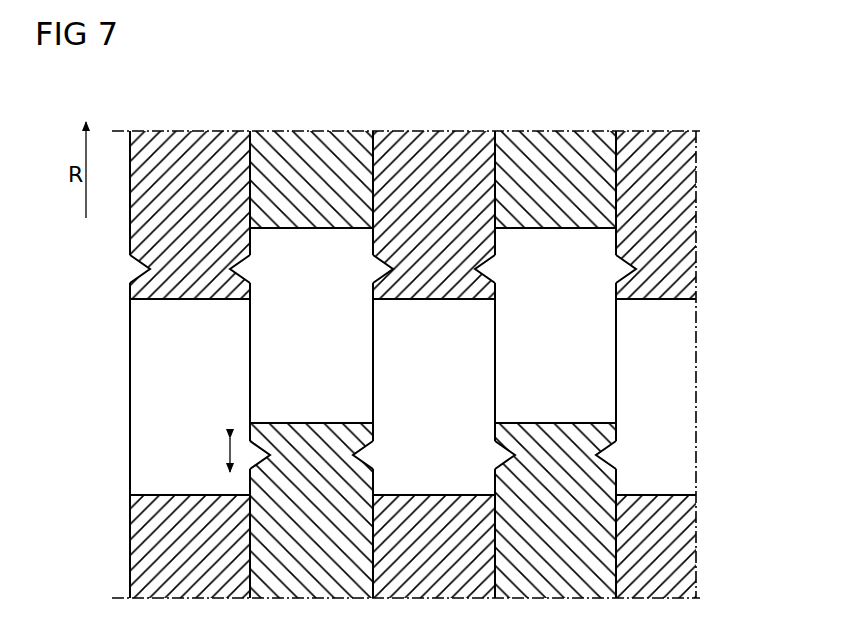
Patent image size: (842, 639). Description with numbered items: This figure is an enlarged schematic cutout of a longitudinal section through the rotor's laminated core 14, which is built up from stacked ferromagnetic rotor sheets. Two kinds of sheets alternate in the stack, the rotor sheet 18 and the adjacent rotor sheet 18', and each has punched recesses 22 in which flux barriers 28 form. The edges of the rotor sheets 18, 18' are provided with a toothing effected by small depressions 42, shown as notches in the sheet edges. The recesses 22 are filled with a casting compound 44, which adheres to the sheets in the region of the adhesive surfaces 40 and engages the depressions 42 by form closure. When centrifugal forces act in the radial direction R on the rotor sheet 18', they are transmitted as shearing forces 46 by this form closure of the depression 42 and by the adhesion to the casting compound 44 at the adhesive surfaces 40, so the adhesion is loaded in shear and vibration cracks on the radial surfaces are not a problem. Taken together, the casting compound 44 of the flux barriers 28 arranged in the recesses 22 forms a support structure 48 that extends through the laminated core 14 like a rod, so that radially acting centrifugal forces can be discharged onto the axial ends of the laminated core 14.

The laminated core 14 is at (474, 84).
The rotor sheet 18 is at (413, 336).
The adjacent rotor sheet 18' is at (433, 336).
The recesses 22 is at (112, 382).
The flux barriers 28 is at (345, 233).
The adhesive surfaces 40 is at (249, 428).
The depressions 42 is at (250, 269).
The casting compound 44 is at (143, 463).
The shearing forces 46 is at (226, 457).
The support structure 48 is at (716, 386).